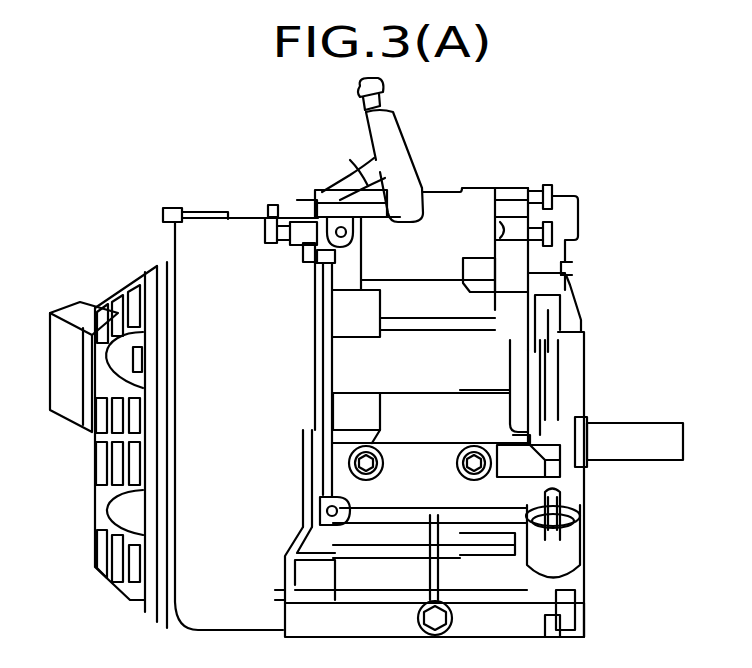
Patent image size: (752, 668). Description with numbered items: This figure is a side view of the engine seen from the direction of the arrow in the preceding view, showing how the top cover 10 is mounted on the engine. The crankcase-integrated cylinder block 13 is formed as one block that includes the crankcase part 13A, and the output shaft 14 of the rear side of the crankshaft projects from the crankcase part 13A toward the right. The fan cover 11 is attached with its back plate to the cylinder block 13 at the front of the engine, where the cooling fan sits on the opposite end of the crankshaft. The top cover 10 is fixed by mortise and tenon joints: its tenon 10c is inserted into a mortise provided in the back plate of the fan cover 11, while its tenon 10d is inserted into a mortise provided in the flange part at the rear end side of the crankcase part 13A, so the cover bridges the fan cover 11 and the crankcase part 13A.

The top cover 10 is at (446, 350).
The tenon 10c is at (332, 411).
The tenon 10d is at (520, 430).
The fan cover 11 is at (208, 232).
The crankcase-integrated cylinder block 13 is at (493, 572).
The crankcase part 13A is at (502, 617).
The output shaft 14 is at (630, 453).